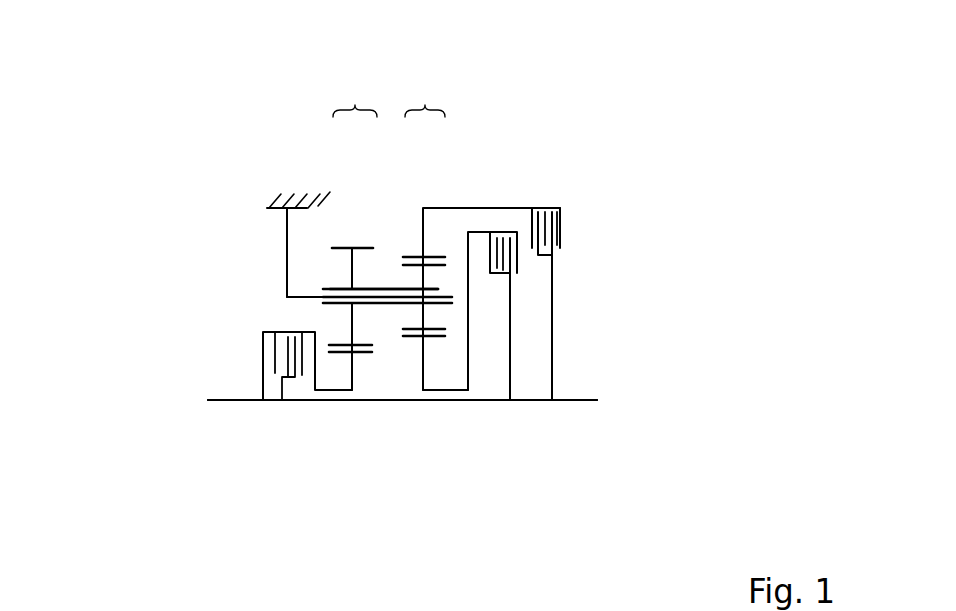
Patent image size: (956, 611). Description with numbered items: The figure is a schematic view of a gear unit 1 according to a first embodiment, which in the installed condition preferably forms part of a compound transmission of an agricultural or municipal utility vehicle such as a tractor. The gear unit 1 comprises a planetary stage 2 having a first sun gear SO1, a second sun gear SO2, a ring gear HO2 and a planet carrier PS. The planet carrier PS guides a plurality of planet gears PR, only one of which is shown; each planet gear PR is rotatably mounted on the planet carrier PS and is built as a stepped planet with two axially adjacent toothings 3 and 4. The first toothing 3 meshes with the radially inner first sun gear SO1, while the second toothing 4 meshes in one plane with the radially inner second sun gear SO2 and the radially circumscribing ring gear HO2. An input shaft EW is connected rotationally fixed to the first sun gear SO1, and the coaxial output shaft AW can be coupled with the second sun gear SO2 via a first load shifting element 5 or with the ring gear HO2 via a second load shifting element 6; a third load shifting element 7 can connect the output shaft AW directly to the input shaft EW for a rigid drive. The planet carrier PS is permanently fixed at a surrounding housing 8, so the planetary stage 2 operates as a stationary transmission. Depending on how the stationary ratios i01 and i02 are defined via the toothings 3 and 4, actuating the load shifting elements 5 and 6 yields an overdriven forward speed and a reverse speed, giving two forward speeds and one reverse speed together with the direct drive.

The gear unit 1 is at (214, 182).
The planetary stage 2 is at (389, 234).
The first toothing 3 is at (345, 245).
The second toothing 4 is at (433, 258).
The first load shifting element 5 is at (506, 224).
The second load shifting element 6 is at (550, 203).
The third load shifting element 7 is at (289, 327).
The housing 8 is at (295, 193).
The planet carrier PS is at (307, 295).
The planet gears PR is at (340, 303).
The first sun gear SO1 is at (353, 375).
The second sun gear SO2 is at (422, 367).
The ring gear HO2 is at (425, 233).
The input shaft EW is at (233, 400).
The output shaft AW is at (567, 399).
The stationary ratio i01 is at (355, 95).
The stationary ratio i02 is at (426, 94).